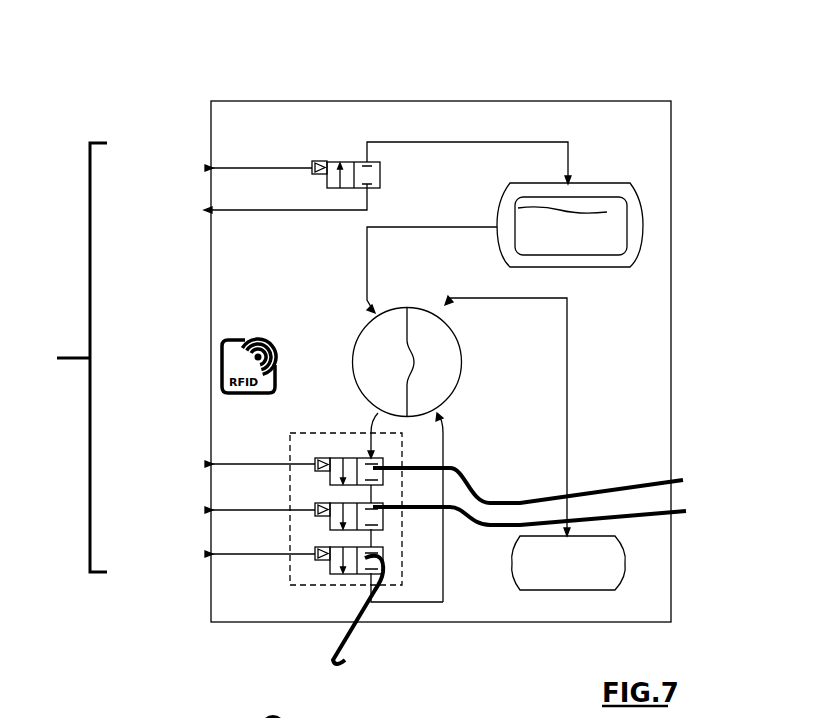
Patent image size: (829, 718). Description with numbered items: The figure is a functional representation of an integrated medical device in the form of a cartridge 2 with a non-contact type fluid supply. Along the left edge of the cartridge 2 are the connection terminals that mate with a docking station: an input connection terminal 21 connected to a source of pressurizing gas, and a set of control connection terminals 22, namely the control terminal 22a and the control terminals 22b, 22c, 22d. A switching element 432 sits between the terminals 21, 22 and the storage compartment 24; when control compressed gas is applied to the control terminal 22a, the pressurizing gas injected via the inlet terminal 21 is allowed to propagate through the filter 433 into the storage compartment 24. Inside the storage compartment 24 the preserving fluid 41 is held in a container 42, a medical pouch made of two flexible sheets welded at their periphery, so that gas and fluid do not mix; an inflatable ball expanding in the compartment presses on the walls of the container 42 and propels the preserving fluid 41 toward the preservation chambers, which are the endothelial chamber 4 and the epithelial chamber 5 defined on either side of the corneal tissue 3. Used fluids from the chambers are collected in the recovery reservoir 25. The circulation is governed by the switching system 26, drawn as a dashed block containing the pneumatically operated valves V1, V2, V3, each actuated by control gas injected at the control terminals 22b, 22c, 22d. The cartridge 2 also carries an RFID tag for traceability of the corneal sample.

The cartridge 2 is at (238, 117).
The control connection terminal 22 is at (61, 357).
The control terminal 22a is at (210, 168).
The control terminal 22b is at (207, 463).
The control terminal 22c is at (207, 510).
The control terminal 22d is at (207, 554).
The input connection terminal 21 is at (206, 213).
The switching element 432 is at (357, 163).
The filter 433 is at (462, 138).
The container 42 is at (597, 198).
The preserving fluid 41 is at (608, 218).
The storage compartment 24 is at (500, 200).
The endothelial chamber 4 is at (363, 348).
The epithelial chamber 5 is at (437, 380).
The corneal tissue 3 is at (417, 360).
The switching system 26 is at (340, 583).
The recovery reservoir 25 is at (542, 572).
The valve V1 is at (547, 482).
The valve V2 is at (551, 512).
The valve V3 is at (362, 614).